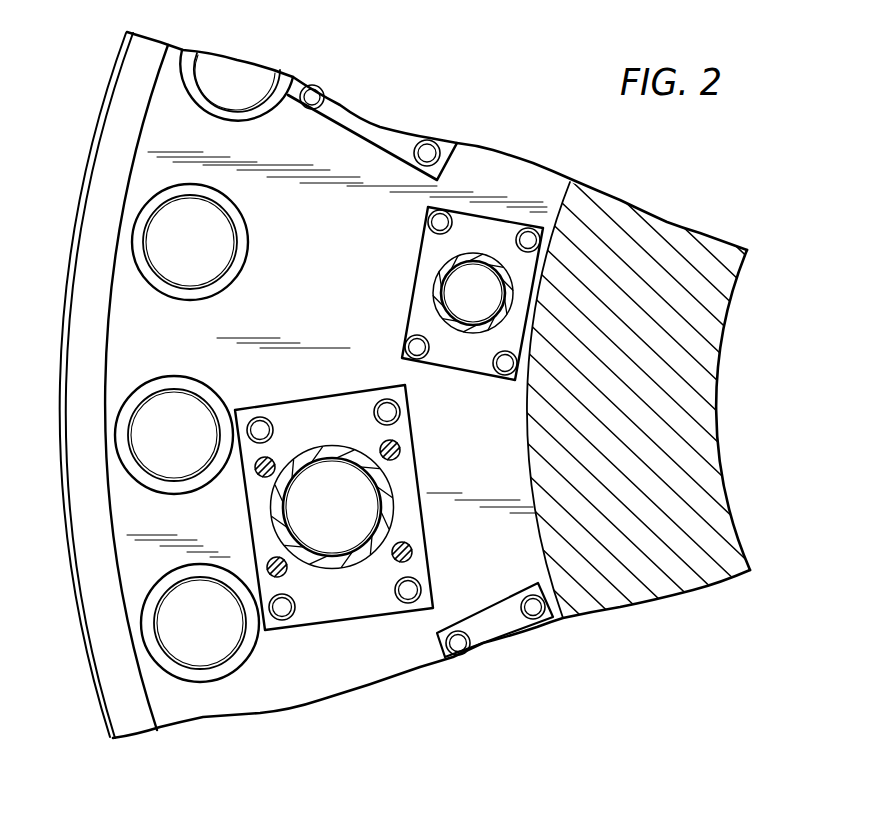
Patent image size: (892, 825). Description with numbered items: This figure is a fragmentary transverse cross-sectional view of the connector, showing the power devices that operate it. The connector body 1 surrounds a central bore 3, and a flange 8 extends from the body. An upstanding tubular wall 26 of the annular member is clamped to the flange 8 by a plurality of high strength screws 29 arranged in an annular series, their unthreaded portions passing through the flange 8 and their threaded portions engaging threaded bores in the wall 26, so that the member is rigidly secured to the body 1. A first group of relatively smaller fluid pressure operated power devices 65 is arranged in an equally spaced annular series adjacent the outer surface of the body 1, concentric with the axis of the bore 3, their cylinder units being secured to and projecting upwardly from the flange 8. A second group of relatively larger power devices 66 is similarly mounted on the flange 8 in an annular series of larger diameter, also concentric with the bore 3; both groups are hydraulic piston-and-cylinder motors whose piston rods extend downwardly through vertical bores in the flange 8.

The body 1 is at (690, 226).
The bore 3 is at (718, 362).
The flange 8 is at (342, 221).
The upstanding tubular wall 26 is at (145, 35).
The high strength screws 29 is at (198, 290).
The fluid pressure operated power devices 65 is at (436, 293).
The power devices 66 is at (380, 138).